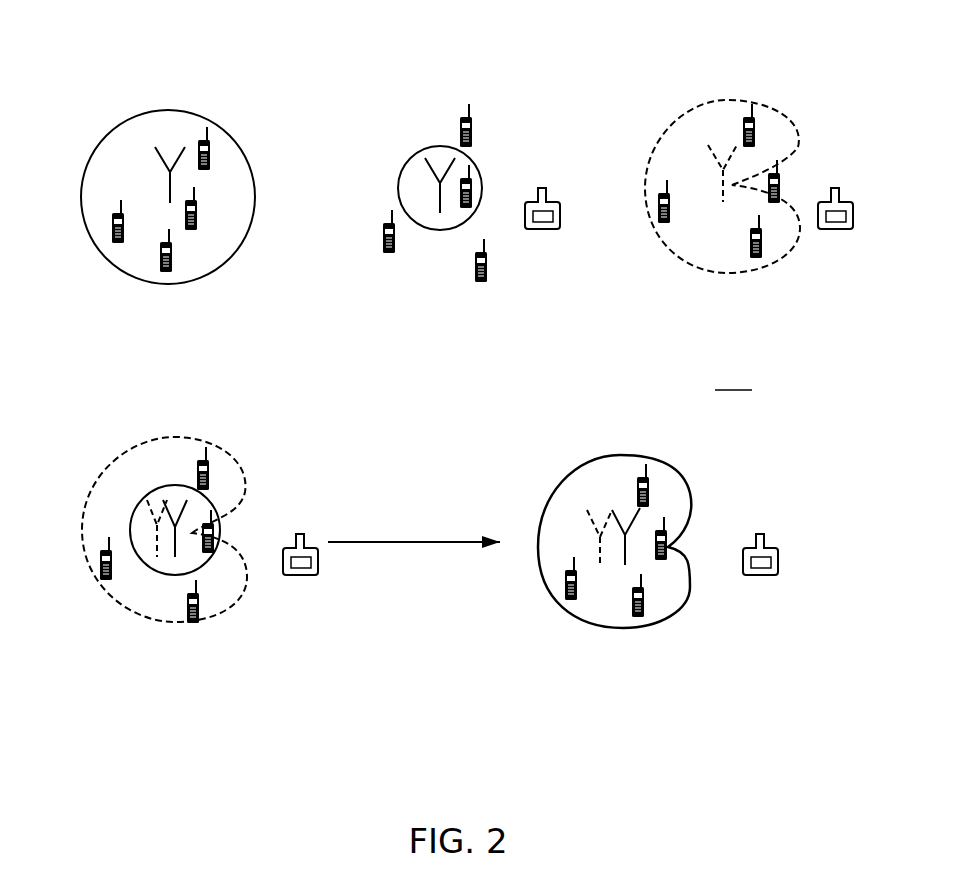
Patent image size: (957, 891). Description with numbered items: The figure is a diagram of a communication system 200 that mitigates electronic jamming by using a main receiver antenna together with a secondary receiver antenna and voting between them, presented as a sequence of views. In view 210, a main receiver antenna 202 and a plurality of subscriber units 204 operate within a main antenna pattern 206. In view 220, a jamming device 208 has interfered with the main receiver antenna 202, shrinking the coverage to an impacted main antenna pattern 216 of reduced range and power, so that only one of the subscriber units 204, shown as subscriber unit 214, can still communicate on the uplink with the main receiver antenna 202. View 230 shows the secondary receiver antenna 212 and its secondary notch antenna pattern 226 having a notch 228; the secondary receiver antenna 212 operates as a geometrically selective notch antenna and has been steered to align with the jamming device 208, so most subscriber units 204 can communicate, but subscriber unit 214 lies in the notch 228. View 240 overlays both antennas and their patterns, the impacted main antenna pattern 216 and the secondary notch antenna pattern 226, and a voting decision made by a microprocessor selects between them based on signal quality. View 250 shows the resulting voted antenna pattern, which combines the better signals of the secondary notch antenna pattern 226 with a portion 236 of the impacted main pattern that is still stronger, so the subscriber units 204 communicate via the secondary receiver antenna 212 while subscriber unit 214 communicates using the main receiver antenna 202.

The communication system 200 is at (145, 55).
The main receiver antenna 202 is at (168, 188).
The subscriber units 204 is at (208, 147).
The main antenna pattern 206 is at (102, 138).
The jamming device 208 is at (560, 213).
The view 210 is at (155, 388).
The secondary receiver antenna 212 is at (722, 171).
The subscriber unit 214 is at (470, 180).
The impacted main antenna pattern 216 is at (407, 163).
The view 220 is at (458, 398).
The secondary notch antenna pattern 226 is at (645, 185).
The notch 228 is at (733, 183).
The view 230 is at (715, 467).
The portion of the main impacted antenna pattern 236 is at (220, 535).
The view 240 is at (193, 768).
The view 250 is at (642, 777).